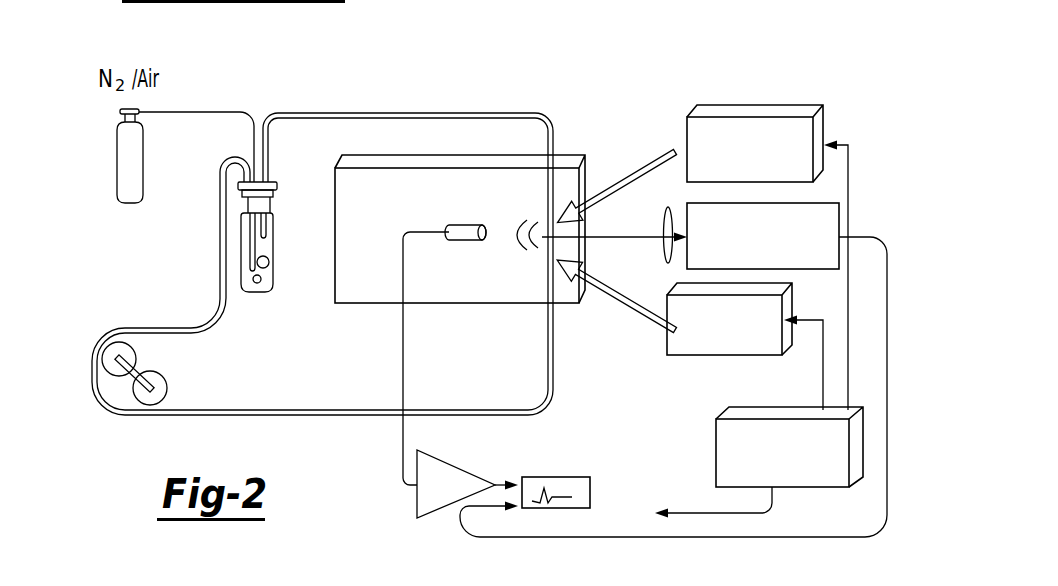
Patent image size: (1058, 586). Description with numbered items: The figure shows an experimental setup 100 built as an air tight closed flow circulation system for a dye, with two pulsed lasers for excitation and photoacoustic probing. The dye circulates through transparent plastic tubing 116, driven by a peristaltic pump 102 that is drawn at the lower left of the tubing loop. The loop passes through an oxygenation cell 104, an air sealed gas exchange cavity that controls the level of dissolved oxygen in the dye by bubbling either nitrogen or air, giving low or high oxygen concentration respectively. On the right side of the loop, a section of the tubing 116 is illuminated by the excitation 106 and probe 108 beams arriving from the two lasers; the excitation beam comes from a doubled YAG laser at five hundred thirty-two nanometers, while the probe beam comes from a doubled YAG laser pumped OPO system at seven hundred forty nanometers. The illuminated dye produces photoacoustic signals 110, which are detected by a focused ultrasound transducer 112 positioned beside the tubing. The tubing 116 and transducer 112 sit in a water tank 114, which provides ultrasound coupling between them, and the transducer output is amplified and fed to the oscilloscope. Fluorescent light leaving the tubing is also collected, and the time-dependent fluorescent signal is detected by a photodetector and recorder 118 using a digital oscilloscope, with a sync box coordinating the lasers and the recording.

The experimental setup 100 is at (615, 59).
The peristaltic pump 102 is at (133, 352).
The oxygenation cell 104 is at (273, 247).
The excitation beam 106 is at (627, 181).
The probe beam 108 is at (633, 302).
The photoacoustic signals 110 is at (517, 230).
The focused ultrasound transducer 112 is at (462, 240).
The water tank 114 is at (362, 303).
The plastic tubing 116 is at (547, 291).
The photodetector and recorder 118 is at (749, 536).